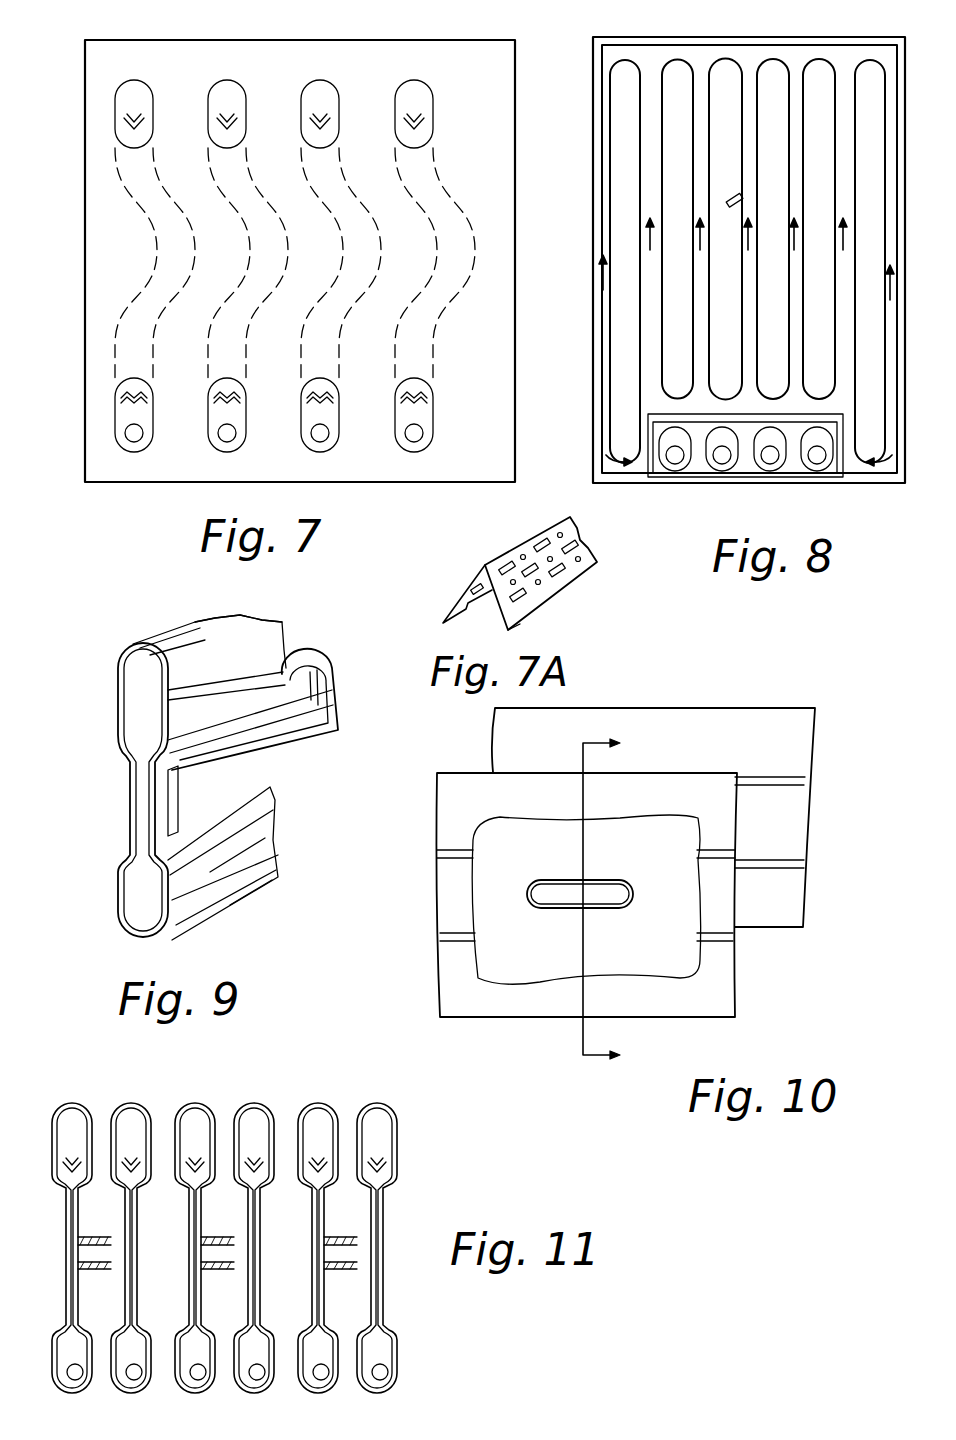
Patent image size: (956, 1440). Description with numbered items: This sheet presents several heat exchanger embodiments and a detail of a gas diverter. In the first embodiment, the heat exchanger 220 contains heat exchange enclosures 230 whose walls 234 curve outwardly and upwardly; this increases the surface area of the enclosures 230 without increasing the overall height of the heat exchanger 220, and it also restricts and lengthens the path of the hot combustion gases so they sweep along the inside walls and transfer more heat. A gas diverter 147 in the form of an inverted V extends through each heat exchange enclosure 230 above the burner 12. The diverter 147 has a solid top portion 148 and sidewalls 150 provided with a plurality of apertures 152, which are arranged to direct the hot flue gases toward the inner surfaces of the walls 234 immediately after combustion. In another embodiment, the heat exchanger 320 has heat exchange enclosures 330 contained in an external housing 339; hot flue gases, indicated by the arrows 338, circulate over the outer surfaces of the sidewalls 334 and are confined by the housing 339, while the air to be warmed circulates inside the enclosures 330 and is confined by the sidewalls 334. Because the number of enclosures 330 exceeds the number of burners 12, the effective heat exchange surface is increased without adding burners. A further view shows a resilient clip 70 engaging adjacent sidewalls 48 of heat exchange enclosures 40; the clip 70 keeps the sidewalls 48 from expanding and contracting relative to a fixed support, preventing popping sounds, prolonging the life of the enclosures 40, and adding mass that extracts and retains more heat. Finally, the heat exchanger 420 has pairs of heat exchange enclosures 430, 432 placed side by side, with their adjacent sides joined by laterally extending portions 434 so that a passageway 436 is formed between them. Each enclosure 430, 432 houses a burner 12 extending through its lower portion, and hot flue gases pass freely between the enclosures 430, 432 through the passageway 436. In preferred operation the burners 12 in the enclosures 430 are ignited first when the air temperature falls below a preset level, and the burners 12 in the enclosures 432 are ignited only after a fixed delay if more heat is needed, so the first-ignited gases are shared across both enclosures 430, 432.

In FIG. 7, the burner 12 is at (216, 437).
In FIG. 8, the burner 12 is at (719, 460).
In FIG. 11, the burner 12 is at (128, 1380).
In FIG. 9, the heat exchange enclosure 40 is at (280, 818).
In FIG. 9, the sidewall 48 is at (122, 764).
In FIG. 9, the resilient clip 70 is at (330, 736).
In FIG. 7, the gas diverter 147 is at (210, 403).
In FIG. 7A, the gas diverter 147 is at (572, 411).
In FIG. 7A, the solid top portion 148 is at (520, 545).
In FIG. 7A, the sidewall 150 is at (520, 611).
In FIG. 7A, the aperture 152 is at (470, 592).
In FIG. 7, the heat exchanger 220 is at (330, 36).
In FIG. 7, the heat exchange enclosure 230 is at (151, 88).
In FIG. 7, the wall 234 is at (157, 228).
In FIG. 8, the heat exchanger 320 is at (752, 34).
In FIG. 8, the heat exchange enclosure 330 is at (722, 62).
In FIG. 8, the sidewall 334 is at (602, 207).
In FIG. 8, the arrows 338 is at (570, 290).
In FIG. 8, the external housing 339 is at (593, 178).
In FIG. 10, the heat exchanger 420 is at (656, 868).
In FIG. 11, the heat exchanger 420 is at (217, 1216).
In FIG. 10, the heat exchange enclosure 430 is at (805, 760).
In FIG. 11, the heat exchange enclosure 430 is at (70, 1104).
In FIG. 10, the heat exchange enclosure 432 is at (730, 971).
In FIG. 11, the heat exchange enclosure 432 is at (131, 1104).
In FIG. 11, the laterally extending portion 434 is at (99, 1237).
In FIG. 10, the passageway 436 is at (598, 893).
In FIG. 11, the passageway 436 is at (100, 1269).